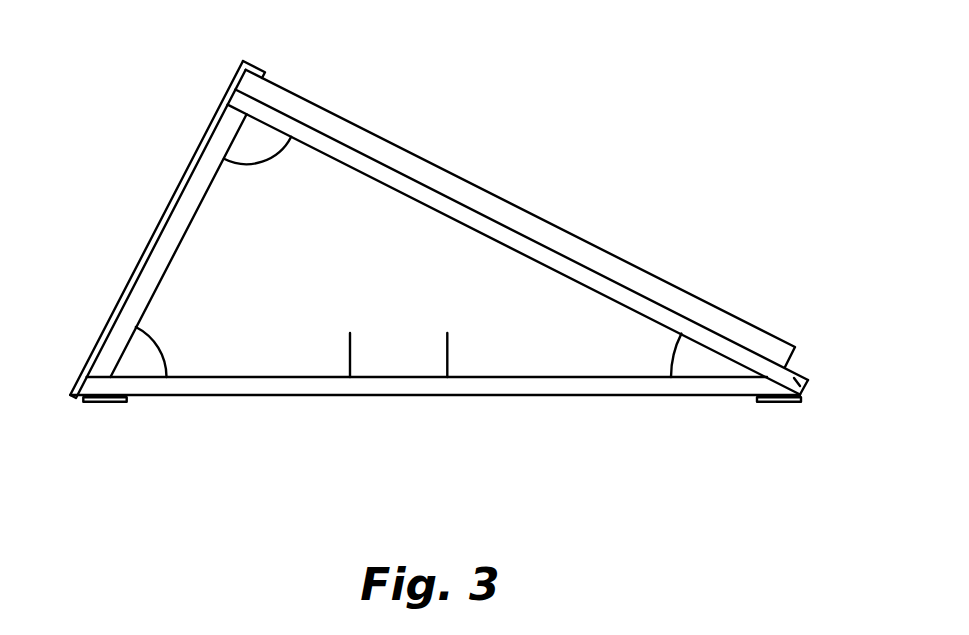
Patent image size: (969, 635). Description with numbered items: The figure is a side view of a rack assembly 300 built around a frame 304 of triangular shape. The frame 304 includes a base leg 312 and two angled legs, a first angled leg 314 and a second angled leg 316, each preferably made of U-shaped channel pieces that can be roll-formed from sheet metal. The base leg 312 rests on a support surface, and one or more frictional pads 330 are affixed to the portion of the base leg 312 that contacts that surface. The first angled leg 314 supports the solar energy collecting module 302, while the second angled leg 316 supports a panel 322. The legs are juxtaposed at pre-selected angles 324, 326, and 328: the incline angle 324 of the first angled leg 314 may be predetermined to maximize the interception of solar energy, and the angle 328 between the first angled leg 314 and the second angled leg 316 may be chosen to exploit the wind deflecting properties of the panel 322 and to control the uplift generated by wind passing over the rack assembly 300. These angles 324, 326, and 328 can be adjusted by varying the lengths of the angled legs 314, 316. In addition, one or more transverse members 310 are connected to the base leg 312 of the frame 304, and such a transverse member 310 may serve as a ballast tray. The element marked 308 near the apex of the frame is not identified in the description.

The rack assembly 300 is at (606, 80).
The solar energy collecting module 302 is at (690, 296).
The frame 304 is at (797, 381).
The apex plate 308 is at (258, 61).
The transverse member 310 is at (448, 362).
The base leg 312 is at (388, 389).
The first angled leg 314 is at (559, 265).
The second angled leg 316 is at (141, 296).
The panel 322 is at (171, 204).
The incline angle 324 is at (680, 367).
The pre-selected angle 326 is at (132, 372).
The incline angle 328 is at (270, 131).
The frictional pad 330 is at (102, 403).